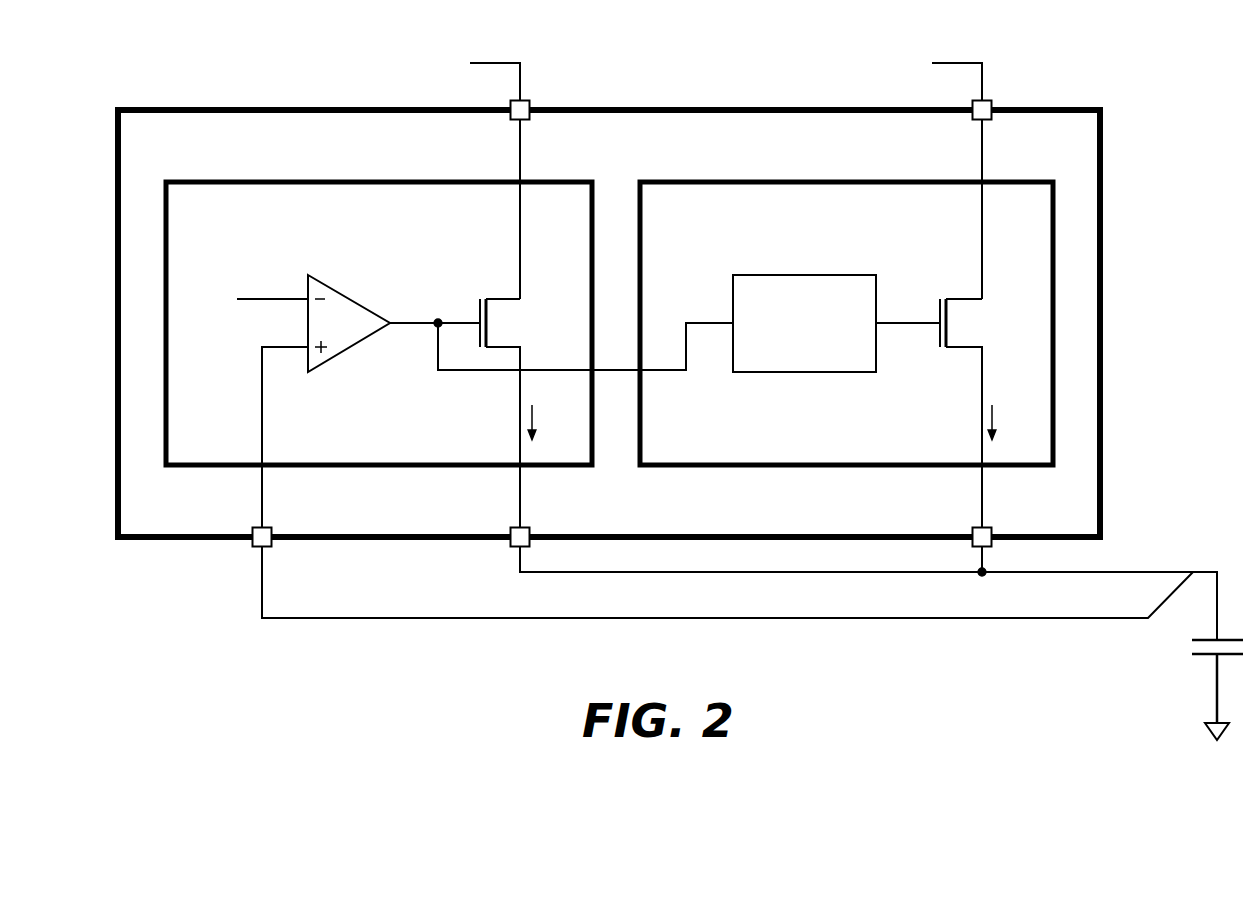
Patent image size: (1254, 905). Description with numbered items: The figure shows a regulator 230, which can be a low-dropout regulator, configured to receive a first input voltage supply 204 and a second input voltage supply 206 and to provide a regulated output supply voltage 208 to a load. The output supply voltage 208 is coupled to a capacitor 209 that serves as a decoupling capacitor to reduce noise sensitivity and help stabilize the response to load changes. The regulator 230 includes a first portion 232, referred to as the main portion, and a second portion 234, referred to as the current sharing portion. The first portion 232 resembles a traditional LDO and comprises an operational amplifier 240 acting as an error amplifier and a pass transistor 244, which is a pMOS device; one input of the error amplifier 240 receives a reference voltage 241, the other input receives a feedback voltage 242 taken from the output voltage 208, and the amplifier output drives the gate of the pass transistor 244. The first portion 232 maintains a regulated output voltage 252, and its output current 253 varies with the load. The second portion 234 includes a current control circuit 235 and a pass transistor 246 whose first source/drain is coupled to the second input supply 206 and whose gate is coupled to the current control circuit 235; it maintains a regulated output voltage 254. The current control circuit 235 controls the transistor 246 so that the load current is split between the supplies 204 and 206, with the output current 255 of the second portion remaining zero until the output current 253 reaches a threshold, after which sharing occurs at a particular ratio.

The first input voltage supply 204 is at (519, 152).
The second input voltage supply 206 is at (980, 152).
The regulated output supply voltage 208 is at (1183, 535).
The capacitor 209 is at (1200, 645).
The regulator 230 is at (231, 122).
The first portion 232 is at (326, 195).
The second portion 234 is at (762, 195).
The current control circuit 235 is at (805, 290).
The operational amplifier 240 is at (344, 338).
The reference voltage 241 is at (260, 300).
The feedback voltage 242 is at (262, 413).
The pass transistor 244 is at (503, 312).
The pass transistor 246 is at (963, 312).
The regulated output voltage 252 is at (593, 505).
The output current 253 is at (566, 418).
The regulated output voltage 254 is at (1052, 505).
The output current 255 is at (1027, 418).